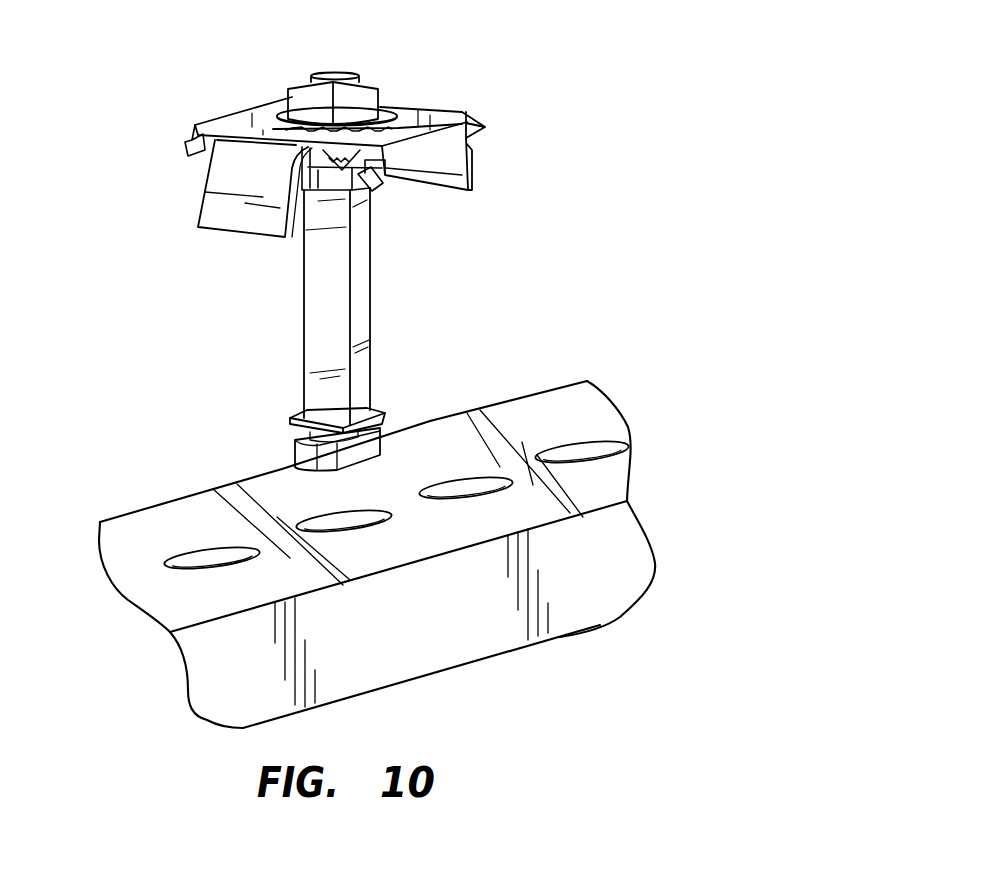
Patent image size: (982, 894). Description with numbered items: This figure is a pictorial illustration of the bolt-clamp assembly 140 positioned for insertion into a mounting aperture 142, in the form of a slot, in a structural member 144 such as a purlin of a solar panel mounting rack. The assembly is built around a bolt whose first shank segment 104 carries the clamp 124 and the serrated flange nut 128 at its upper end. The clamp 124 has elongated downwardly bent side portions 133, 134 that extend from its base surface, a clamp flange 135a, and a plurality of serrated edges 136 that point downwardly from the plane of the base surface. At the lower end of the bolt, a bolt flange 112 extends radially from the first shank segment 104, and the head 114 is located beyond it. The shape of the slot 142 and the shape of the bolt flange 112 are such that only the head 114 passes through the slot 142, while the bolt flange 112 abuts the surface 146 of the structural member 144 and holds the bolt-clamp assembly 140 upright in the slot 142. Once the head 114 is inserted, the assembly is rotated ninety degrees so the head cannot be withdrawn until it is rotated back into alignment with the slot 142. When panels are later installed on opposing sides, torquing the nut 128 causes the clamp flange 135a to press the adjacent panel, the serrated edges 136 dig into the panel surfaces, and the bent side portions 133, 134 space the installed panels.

The first shank segment 104 is at (372, 302).
The bolt flange 112 is at (299, 413).
The head 114 is at (294, 451).
The clamp 124 is at (463, 110).
The nut 128 is at (304, 76).
The bent side portion 133 is at (216, 231).
The bent side portion 134 is at (470, 192).
The clamp flange 135a is at (433, 153).
The serrated edges 136 is at (201, 153).
The bolt-clamp assembly 140 is at (406, 62).
The mounting aperture 142 is at (603, 457).
The structural member 144 is at (537, 386).
The surface 146 is at (203, 517).